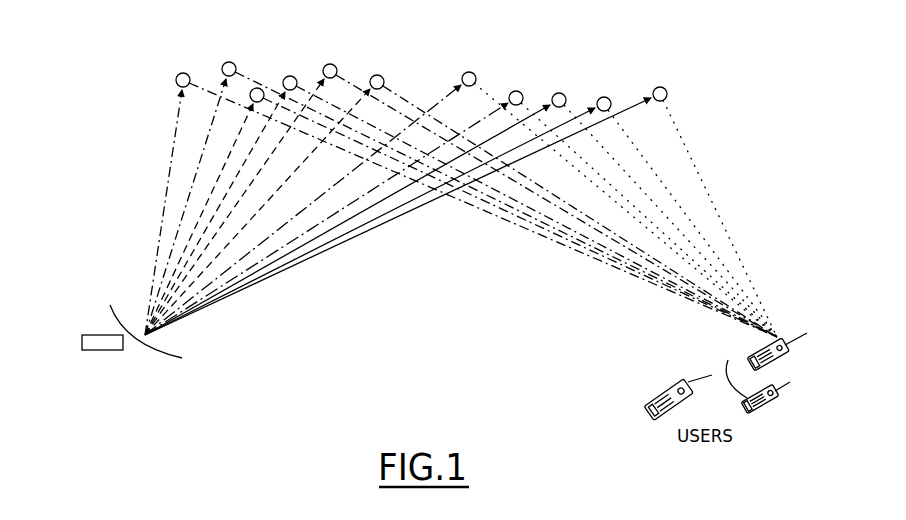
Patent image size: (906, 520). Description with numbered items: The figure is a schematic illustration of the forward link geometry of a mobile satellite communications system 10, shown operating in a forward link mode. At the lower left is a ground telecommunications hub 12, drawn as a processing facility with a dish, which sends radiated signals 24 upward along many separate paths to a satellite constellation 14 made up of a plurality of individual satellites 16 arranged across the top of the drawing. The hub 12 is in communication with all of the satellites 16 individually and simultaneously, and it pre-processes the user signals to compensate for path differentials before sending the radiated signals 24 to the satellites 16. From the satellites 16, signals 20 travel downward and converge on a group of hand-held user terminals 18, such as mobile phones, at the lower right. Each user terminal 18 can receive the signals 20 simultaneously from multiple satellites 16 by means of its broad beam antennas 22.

The mobile satellite communications system 10 is at (446, 184).
The ground telecommunications hub 12 is at (92, 334).
The satellite constellation 14 is at (587, 88).
The individual satellites 16 is at (474, 73).
The hand-held user terminals 18 is at (685, 378).
The signals 20 is at (672, 220).
The broad beam antennas 22 is at (786, 392).
The radiated signals 24 is at (197, 228).